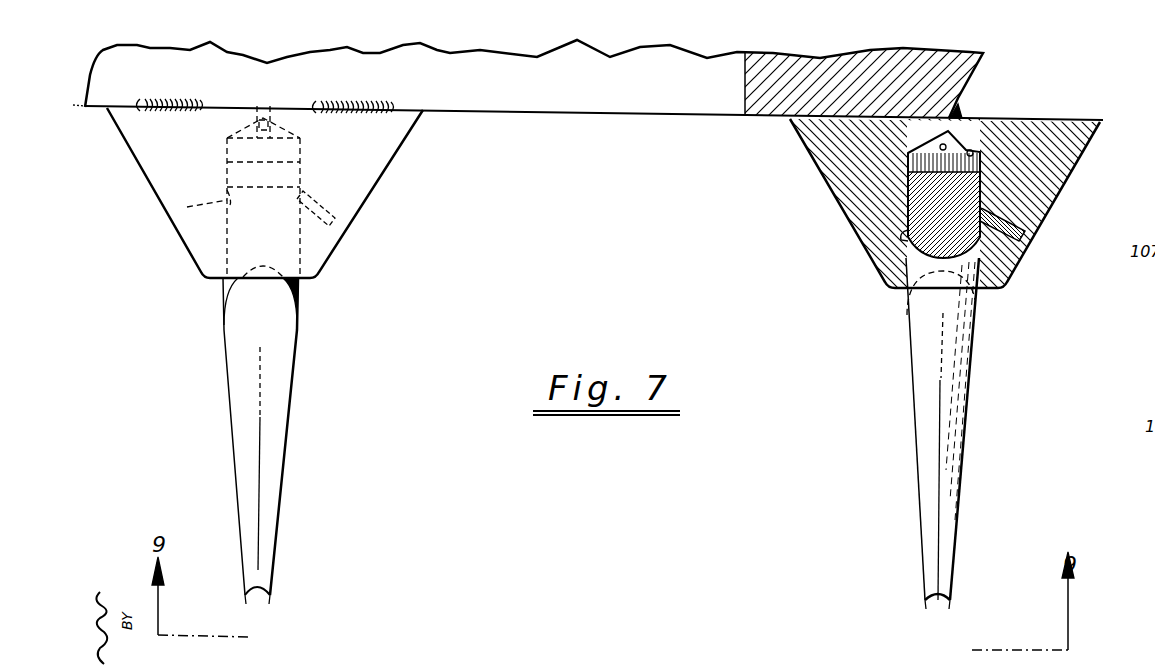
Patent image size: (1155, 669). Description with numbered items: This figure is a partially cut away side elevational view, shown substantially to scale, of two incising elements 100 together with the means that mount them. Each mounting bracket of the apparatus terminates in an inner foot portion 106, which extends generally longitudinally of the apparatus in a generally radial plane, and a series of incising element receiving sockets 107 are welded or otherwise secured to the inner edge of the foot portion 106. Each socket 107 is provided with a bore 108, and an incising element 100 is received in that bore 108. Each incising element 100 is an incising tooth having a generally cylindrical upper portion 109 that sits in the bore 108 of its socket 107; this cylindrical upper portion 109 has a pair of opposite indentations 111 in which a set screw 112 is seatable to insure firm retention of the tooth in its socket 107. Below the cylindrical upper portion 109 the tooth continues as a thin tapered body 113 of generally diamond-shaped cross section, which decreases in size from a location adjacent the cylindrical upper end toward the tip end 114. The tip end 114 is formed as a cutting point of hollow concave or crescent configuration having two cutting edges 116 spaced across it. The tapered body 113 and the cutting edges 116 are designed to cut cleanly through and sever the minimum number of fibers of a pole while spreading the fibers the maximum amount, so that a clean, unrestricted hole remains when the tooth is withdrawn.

The incising element 100 is at (283, 418).
The inner foot portion 106 is at (522, 97).
The incising element receiving socket 107 is at (323, 253).
The bore 108 is at (972, 151).
The cylindrical upper portion 109 is at (223, 247).
The indentations 111 is at (227, 190).
The set screw 112 is at (313, 197).
The tapered body 113 is at (272, 505).
The tip end 114 is at (260, 607).
The cutting edges 116 is at (245, 602).